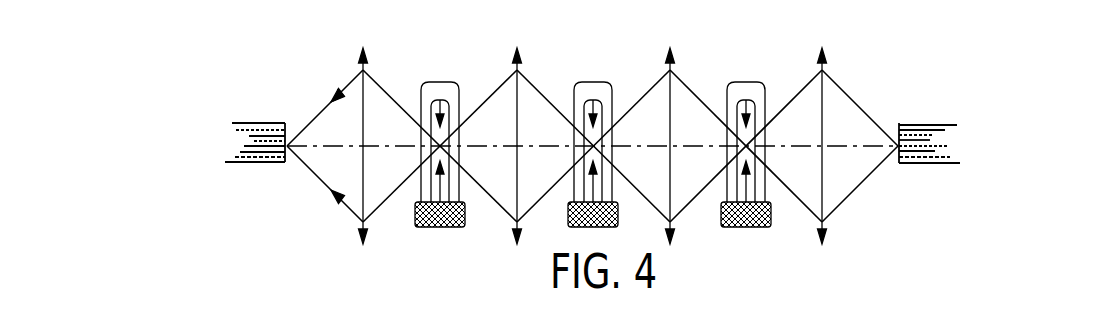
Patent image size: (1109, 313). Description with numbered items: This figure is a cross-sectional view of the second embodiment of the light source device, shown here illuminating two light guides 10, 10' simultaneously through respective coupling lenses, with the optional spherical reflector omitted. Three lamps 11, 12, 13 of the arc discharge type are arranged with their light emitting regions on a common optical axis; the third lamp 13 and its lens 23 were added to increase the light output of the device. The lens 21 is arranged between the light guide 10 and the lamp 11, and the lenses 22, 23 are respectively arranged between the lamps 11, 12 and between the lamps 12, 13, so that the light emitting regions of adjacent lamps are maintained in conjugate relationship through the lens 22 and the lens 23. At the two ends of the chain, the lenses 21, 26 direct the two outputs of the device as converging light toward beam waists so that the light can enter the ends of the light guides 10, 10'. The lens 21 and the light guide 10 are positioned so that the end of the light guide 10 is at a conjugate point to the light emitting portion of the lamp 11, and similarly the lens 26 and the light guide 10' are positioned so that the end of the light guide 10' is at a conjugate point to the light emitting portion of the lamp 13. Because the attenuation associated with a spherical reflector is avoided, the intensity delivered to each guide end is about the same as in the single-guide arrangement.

The light guide 10 is at (255, 115).
The light guide 10' is at (929, 110).
The lens 21 is at (361, 57).
The lens 22 is at (515, 57).
The lens 23 is at (668, 57).
The lens 26 is at (820, 57).
The lamp 11 is at (438, 86).
The lamp 12 is at (594, 86).
The lamp 13 is at (746, 86).